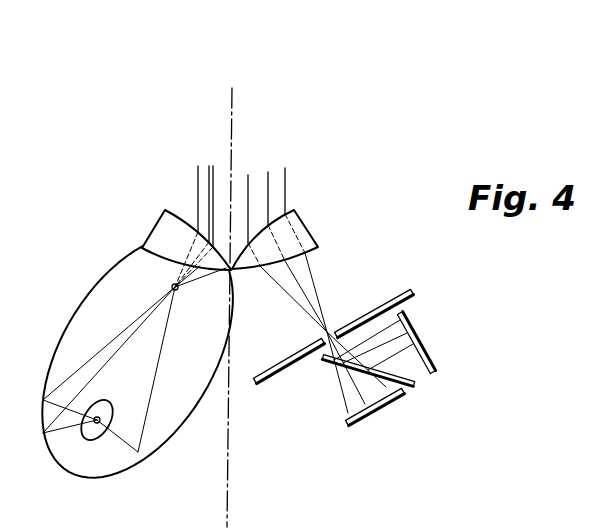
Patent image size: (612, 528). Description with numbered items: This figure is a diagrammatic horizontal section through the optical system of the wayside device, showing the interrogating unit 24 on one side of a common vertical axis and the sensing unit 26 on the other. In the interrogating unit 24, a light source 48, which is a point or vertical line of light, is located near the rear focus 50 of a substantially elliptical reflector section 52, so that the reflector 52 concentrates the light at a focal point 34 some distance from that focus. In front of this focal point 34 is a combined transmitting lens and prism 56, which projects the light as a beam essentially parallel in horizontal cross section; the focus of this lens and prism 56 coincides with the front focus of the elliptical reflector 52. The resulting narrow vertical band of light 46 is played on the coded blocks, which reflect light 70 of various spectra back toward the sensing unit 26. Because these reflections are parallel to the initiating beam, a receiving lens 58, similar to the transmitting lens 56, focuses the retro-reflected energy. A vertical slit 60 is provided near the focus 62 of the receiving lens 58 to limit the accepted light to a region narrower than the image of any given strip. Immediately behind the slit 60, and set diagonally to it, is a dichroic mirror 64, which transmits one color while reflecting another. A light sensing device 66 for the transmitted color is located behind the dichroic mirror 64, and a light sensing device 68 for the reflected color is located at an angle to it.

The interrogating unit 24 is at (125, 339).
The sensing unit 26 is at (371, 386).
The focal point of illuminating light 34 is at (172, 287).
The narrow vertical band of light 46 is at (213, 190).
The light source 48 is at (107, 399).
The rear focus 50 is at (88, 437).
The elliptical reflector section 52 is at (60, 346).
The combined transmitting lens and prism 56 is at (157, 230).
The receiving lens 58 is at (306, 233).
The vertical slit 60 is at (333, 322).
The focus of the receiving lens 62 is at (325, 334).
The dichroic mirror 64 is at (327, 362).
The light sensing device for the transmitted color 66 is at (347, 427).
The light sensing device for the reflected color 68 is at (422, 342).
The reflected light of various spectra 70 is at (250, 182).